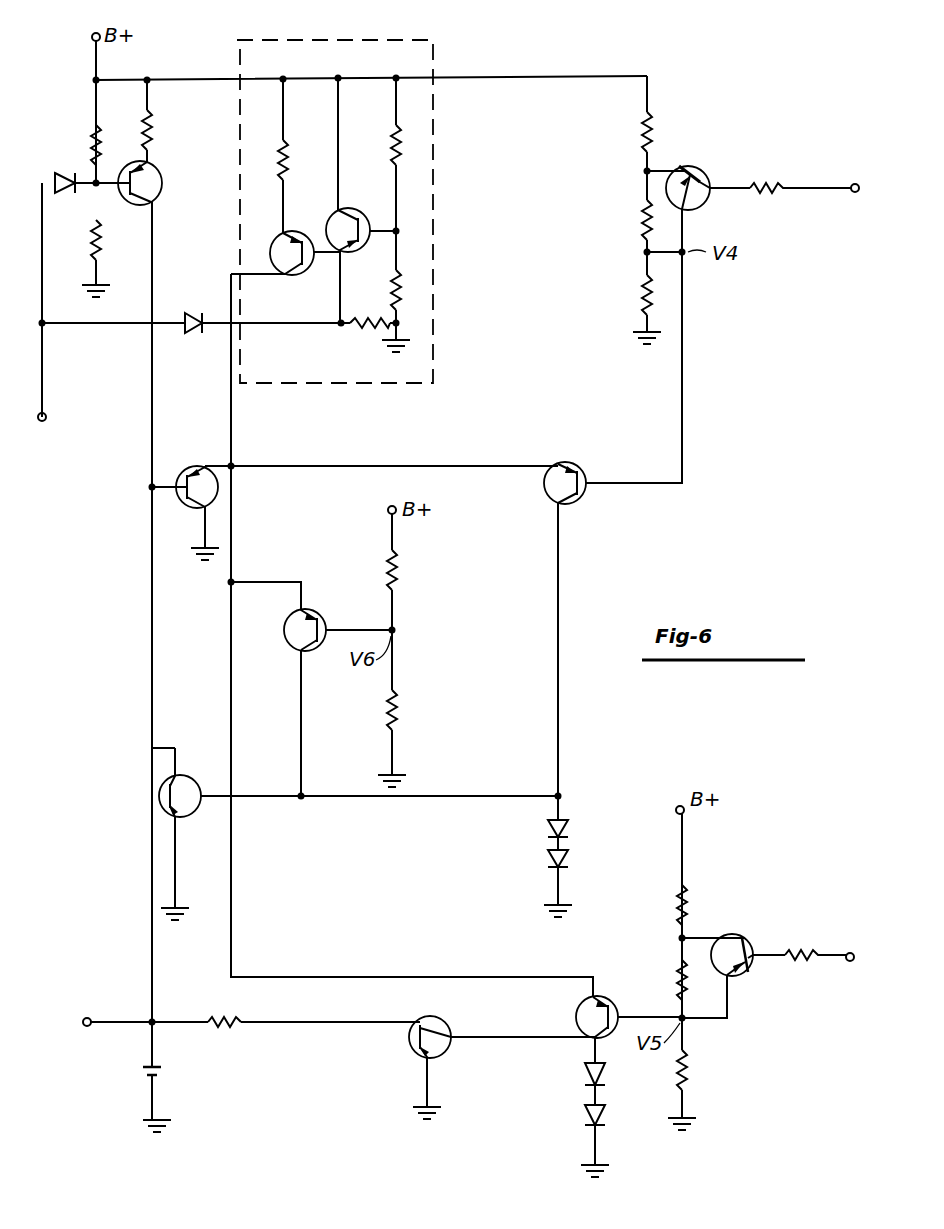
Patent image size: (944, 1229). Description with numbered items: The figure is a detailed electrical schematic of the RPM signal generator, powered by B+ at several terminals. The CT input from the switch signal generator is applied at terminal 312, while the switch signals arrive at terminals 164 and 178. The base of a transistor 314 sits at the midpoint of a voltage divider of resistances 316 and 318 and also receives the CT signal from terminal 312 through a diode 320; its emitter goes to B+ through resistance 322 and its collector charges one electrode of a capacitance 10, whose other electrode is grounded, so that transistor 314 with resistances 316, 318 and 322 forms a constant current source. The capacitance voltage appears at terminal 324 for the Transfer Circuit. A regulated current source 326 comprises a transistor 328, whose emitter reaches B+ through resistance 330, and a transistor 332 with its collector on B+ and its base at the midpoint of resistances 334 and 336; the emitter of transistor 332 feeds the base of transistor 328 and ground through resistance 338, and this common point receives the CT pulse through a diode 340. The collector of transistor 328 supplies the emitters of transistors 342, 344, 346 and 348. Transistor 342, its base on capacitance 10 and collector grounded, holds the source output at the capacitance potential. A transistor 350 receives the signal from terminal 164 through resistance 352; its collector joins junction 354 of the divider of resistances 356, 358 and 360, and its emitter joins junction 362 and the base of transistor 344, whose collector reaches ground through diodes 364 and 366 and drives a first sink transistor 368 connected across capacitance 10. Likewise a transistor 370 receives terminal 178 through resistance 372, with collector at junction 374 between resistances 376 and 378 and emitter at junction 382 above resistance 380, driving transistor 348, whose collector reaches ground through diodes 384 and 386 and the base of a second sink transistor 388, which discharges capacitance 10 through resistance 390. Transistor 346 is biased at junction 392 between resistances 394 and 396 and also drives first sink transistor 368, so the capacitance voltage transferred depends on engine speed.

The capacitance 10 is at (160, 1079).
The input terminal 164 is at (853, 195).
The terminal 178 is at (872, 923).
The terminal 312 is at (47, 432).
The transistor 314 is at (162, 170).
The resistance 316 is at (93, 142).
The resistance 318 is at (92, 243).
The diode 320 is at (72, 160).
The resistance 322 is at (152, 131).
The terminal 324 is at (90, 1017).
The regulated current source 326 is at (356, 372).
The transistor 328 is at (296, 231).
The resistance 330 is at (290, 155).
The transistor 332 is at (354, 208).
The resistance 334 is at (404, 136).
The resistance 336 is at (405, 285).
The resistance 338 is at (364, 312).
The diode 340 is at (206, 297).
The transistor 342 is at (199, 465).
The transistor 344 is at (556, 464).
The transistor 346 is at (311, 611).
The transistor 348 is at (576, 1012).
The transistor 350 is at (692, 165).
The resistance 352 is at (762, 185).
The junction 354 is at (643, 173).
The resistance 356 is at (655, 118).
The resistance 358 is at (643, 216).
The resistance 360 is at (643, 300).
The junction 362 is at (643, 255).
The diode 364 is at (547, 826).
The diode 366 is at (547, 857).
The first sink transistor 368 is at (190, 778).
The transistor 370 is at (726, 936).
The resistance 372 is at (800, 968).
The junction 374 is at (680, 938).
The resistance 376 is at (688, 886).
The resistance 378 is at (680, 976).
The resistance 380 is at (690, 1080).
The junction 382 is at (690, 1022).
The diode 384 is at (584, 1073).
The diode 386 is at (584, 1115).
The second sink transistor 388 is at (408, 1043).
The resistance 390 is at (225, 1030).
The junction 392 is at (396, 628).
The resistance 394 is at (398, 566).
The resistance 396 is at (398, 718).